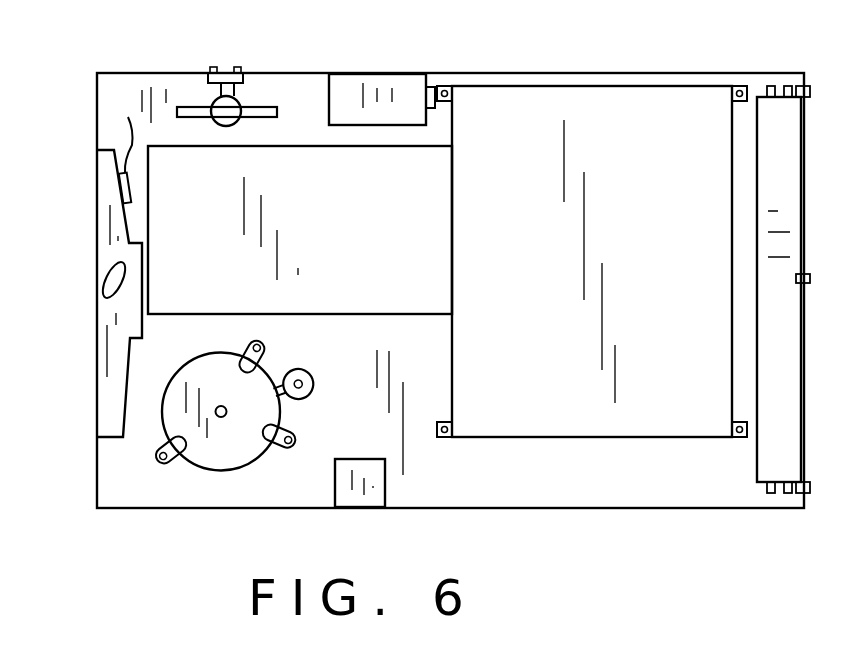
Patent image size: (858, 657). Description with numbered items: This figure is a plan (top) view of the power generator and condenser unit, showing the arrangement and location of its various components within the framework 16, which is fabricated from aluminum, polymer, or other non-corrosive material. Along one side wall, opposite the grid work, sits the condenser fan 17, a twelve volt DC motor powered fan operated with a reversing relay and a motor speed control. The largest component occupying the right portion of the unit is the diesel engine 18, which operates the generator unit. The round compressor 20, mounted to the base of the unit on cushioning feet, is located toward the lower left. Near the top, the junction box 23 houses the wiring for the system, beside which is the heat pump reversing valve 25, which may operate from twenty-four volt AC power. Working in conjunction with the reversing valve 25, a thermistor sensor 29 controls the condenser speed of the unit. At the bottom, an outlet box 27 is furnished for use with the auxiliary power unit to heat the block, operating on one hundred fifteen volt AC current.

The framework 16 is at (780, 163).
The condenser fan 17 is at (110, 280).
The diesel engine 18 is at (580, 113).
The compressor 20 is at (219, 453).
The junction box 23 is at (383, 90).
The heat pump reversing valve 25 is at (240, 100).
The outlet box 27 is at (360, 497).
The thermistor sensor 29 is at (130, 138).